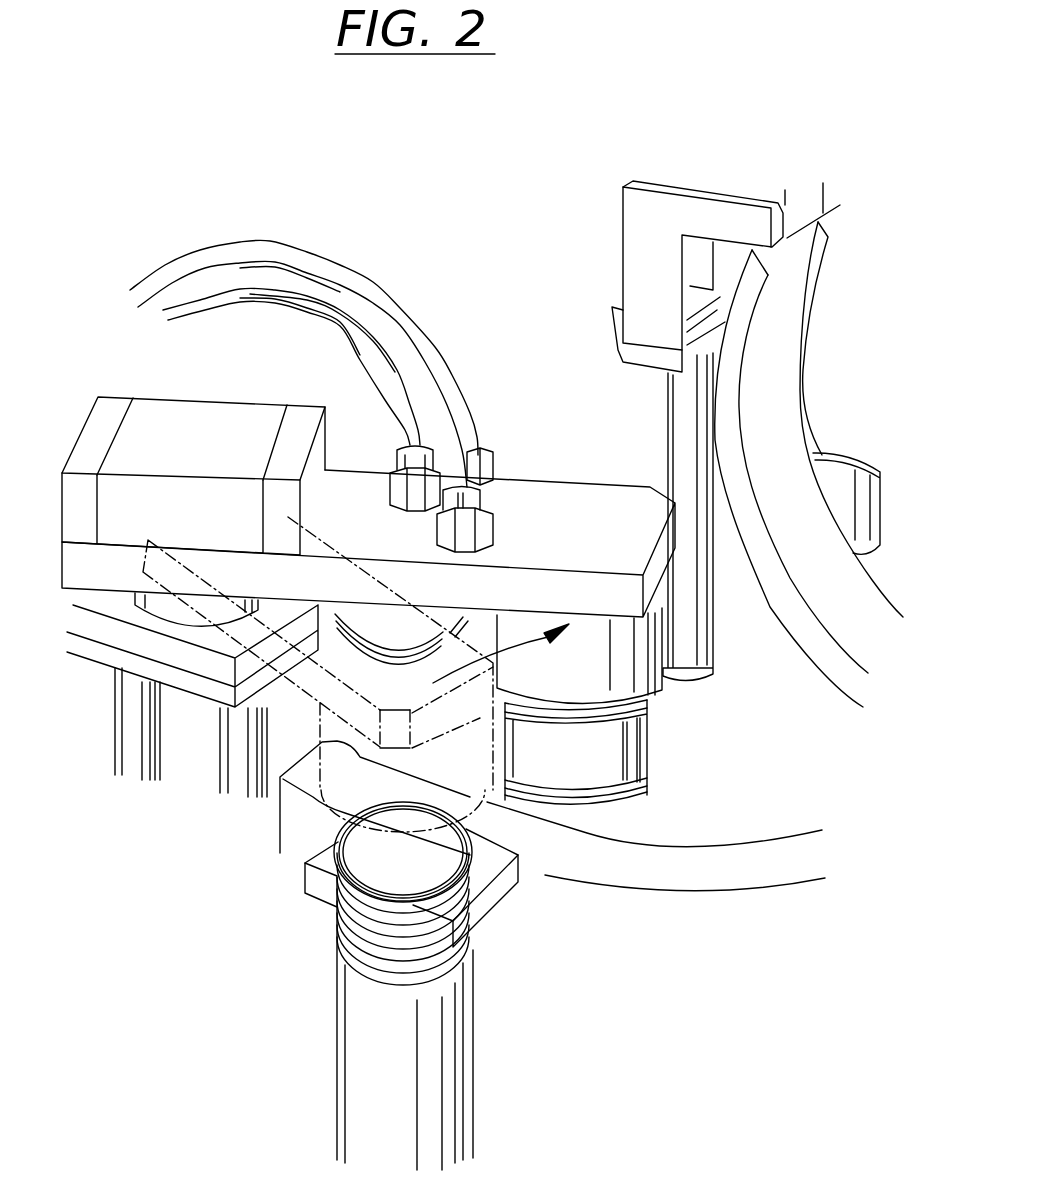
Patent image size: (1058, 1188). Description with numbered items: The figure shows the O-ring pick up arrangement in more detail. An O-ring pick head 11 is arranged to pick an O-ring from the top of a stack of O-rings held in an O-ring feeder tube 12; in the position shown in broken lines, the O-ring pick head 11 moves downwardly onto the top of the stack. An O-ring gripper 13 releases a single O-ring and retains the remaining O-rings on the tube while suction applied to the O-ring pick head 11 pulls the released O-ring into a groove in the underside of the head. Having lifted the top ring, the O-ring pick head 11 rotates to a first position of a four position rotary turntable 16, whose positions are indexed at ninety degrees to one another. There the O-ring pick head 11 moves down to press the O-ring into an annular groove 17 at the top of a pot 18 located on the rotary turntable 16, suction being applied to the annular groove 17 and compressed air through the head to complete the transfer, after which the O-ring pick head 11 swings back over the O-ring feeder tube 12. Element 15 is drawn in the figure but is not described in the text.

The O-ring pick head 11 is at (592, 493).
The O-ring feeder tube 12 is at (440, 970).
The O-ring gripper 13 is at (487, 898).
The lower flange 15 is at (652, 786).
The rotary turntable 16 is at (782, 814).
The annular groove 17 is at (647, 707).
The pot 18 is at (598, 779).